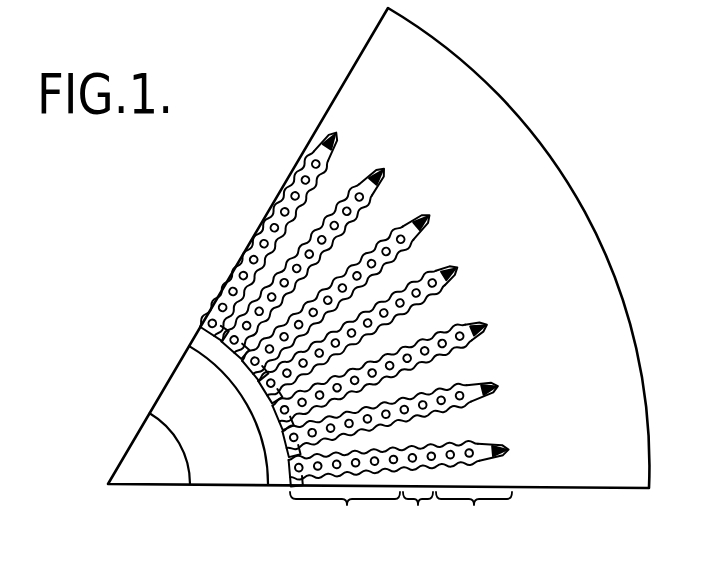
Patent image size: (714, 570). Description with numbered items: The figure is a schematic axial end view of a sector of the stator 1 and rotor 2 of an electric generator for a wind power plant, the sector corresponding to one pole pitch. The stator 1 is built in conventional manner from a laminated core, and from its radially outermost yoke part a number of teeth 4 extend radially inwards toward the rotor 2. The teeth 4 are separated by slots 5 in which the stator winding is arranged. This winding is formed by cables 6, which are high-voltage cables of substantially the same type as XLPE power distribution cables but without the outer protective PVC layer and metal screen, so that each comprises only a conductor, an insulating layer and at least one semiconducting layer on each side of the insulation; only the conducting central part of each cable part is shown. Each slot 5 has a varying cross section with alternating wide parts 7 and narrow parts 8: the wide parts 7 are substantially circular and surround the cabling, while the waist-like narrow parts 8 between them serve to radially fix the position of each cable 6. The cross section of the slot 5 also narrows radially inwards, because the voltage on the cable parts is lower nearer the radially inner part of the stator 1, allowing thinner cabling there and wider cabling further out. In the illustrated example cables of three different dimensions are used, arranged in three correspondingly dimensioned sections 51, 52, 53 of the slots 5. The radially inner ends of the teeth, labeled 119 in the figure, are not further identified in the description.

The stator 1 is at (630, 215).
The rotor 2 is at (223, 468).
The teeth 4 is at (433, 253).
The slots 5 is at (457, 387).
The cables 6 is at (490, 433).
The wide parts 7 is at (437, 297).
The narrow parts 8 is at (433, 302).
The section 51 is at (474, 516).
The section 52 is at (413, 516).
The section 53 is at (345, 516).
The fin end portion 119 is at (386, 170).